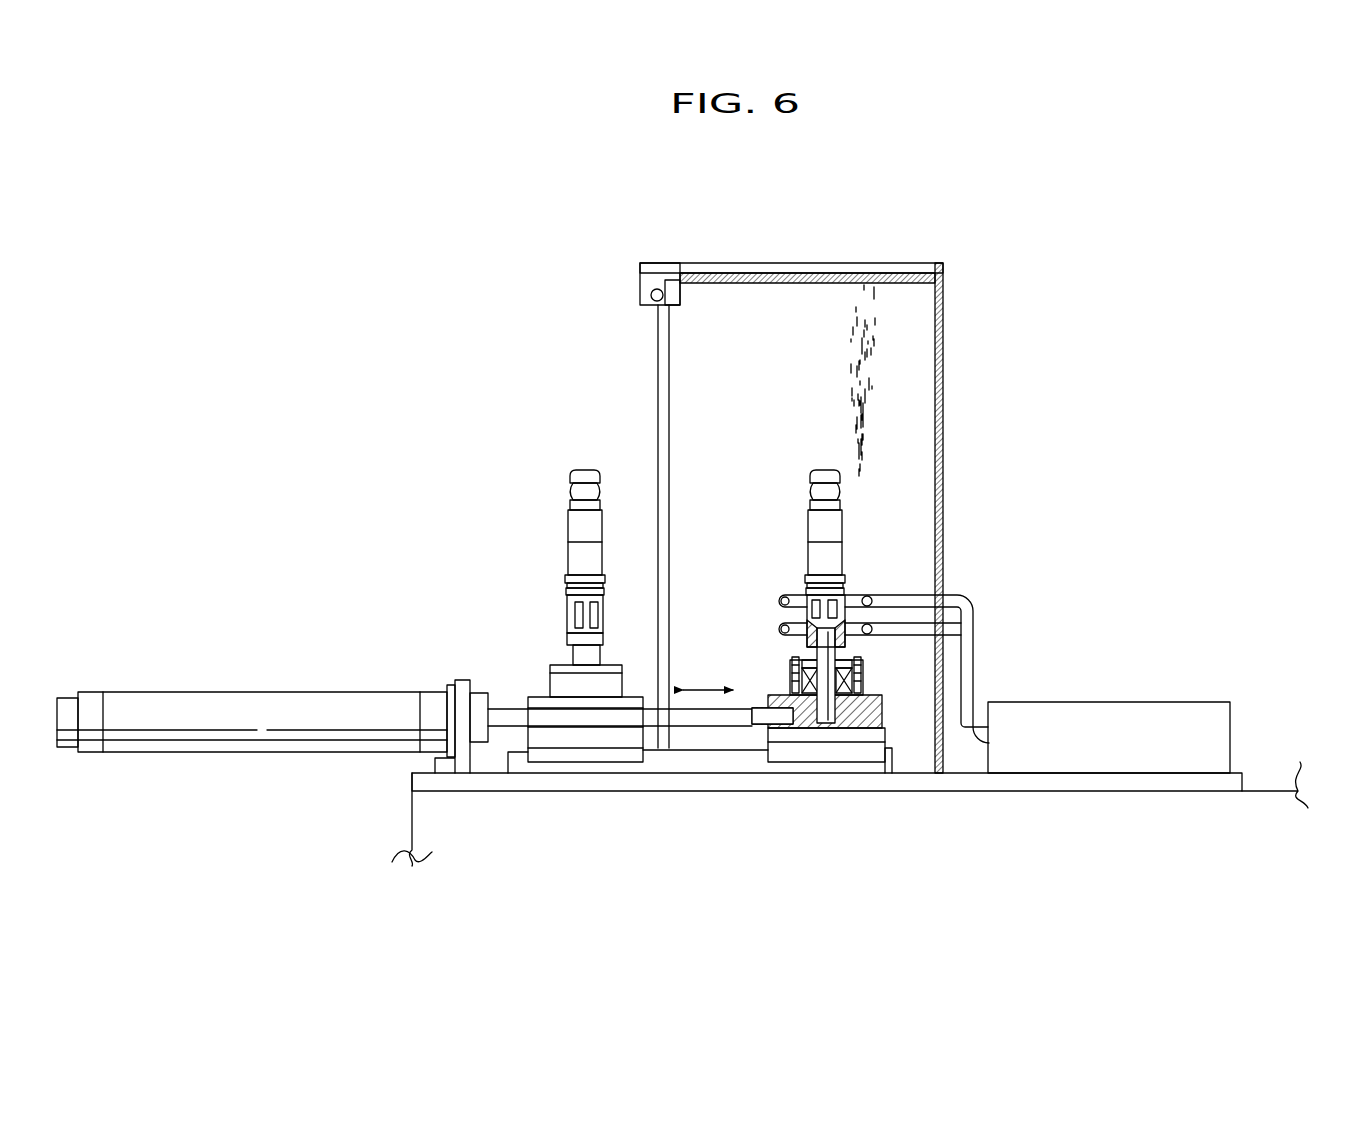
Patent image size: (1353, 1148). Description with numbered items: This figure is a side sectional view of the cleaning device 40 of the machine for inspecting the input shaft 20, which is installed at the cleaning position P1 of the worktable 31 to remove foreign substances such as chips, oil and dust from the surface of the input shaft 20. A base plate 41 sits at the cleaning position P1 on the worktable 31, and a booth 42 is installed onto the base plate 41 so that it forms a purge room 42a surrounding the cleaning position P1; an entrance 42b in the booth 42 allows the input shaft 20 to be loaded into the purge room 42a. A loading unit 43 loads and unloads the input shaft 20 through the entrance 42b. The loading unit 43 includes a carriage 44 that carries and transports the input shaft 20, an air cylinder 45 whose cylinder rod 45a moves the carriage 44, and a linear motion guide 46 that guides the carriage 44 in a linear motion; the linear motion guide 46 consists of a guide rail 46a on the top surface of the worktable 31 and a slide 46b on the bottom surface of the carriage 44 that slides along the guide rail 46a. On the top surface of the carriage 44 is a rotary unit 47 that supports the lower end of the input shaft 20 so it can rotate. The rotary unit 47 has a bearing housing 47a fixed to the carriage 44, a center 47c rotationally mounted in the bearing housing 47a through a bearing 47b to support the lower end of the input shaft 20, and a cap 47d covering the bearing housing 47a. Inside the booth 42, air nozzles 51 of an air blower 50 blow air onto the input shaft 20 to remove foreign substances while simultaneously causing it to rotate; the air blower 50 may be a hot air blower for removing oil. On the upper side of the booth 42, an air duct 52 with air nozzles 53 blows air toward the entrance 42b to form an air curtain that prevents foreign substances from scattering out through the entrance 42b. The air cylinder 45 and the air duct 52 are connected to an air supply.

The input shaft 20 is at (565, 566).
The worktable 31 is at (412, 812).
The cleaning device 40 is at (318, 437).
The base plate 41 is at (545, 787).
The booth 42 is at (777, 518).
The purge room 42a is at (888, 484).
The entrance 42b is at (668, 452).
The loading unit 43 is at (235, 692).
The carriage 44 is at (832, 730).
The air cylinder 45 is at (240, 735).
The cylinder rod 45a is at (506, 712).
The linear motion guide 46 is at (700, 819).
The guide rail 46a is at (727, 763).
The slide 46b is at (797, 753).
The rotary unit 47 is at (545, 673).
The bearing housing 47a is at (885, 700).
The bearing 47b is at (865, 722).
The center 47c is at (808, 638).
The cap 47d is at (872, 627).
The air blower 50 is at (1185, 702).
The air nozzles 51 is at (873, 596).
The air duct 52 is at (640, 291).
The air nozzles 53 is at (640, 297).
The cleaning position P1 is at (700, 418).